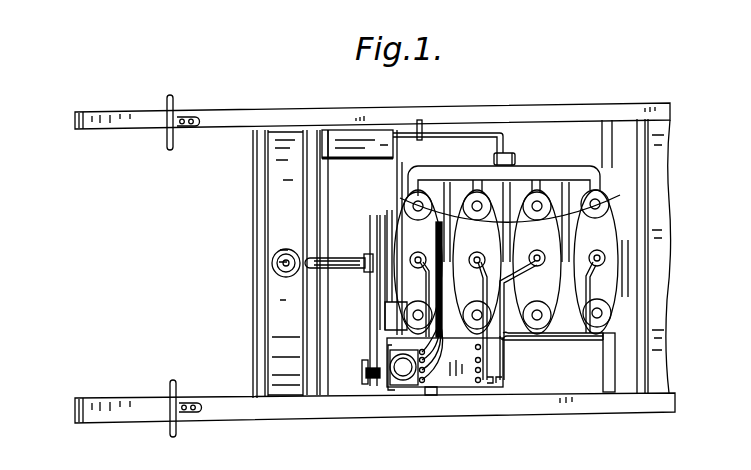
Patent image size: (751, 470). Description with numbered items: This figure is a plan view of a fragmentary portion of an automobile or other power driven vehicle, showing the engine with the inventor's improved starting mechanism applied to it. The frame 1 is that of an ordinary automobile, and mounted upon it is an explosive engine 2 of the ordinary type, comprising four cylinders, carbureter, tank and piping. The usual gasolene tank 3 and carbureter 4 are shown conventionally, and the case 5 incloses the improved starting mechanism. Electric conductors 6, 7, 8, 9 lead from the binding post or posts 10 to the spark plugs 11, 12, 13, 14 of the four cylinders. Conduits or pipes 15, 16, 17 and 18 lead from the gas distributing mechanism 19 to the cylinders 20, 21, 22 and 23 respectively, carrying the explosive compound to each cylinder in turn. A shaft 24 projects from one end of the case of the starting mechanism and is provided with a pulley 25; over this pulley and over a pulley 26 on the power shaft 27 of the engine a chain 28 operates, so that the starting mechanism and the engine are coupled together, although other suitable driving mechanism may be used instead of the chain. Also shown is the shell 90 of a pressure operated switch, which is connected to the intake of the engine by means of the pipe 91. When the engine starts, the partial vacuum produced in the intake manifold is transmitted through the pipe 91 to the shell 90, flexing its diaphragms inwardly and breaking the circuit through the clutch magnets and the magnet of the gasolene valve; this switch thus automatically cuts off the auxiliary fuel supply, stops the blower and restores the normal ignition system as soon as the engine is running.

The frame 1 is at (500, 117).
The explosive engine 2 is at (607, 218).
The gasolene tank 3 is at (365, 141).
The carbureter 4 is at (513, 160).
The case 5 is at (463, 373).
The electric conductor 6 is at (430, 211).
The electric conductor 7 is at (473, 207).
The electric conductor 8 is at (533, 206).
The electric conductor 9 is at (582, 205).
The binding post 10 is at (418, 386).
The spark plug 11 is at (415, 207).
The spark plug 12 is at (475, 182).
The spark plug 13 is at (548, 188).
The spark plug 14 is at (603, 197).
The conduit 15 is at (433, 318).
The conduit 16 is at (504, 338).
The conduit 17 is at (535, 341).
The conduit 18 is at (580, 337).
The gas distributing mechanism 19 is at (493, 383).
The cylinder 20 is at (373, 287).
The cylinder 21 is at (477, 264).
The cylinder 22 is at (536, 262).
The cylinder 23 is at (606, 258).
The shaft 24 is at (368, 372).
The pulley 25 is at (370, 381).
The pulley 26 is at (414, 265).
The power shaft 27 is at (368, 257).
The chain 28 is at (379, 327).
The shell 90 is at (410, 337).
The pipe 91 is at (402, 172).